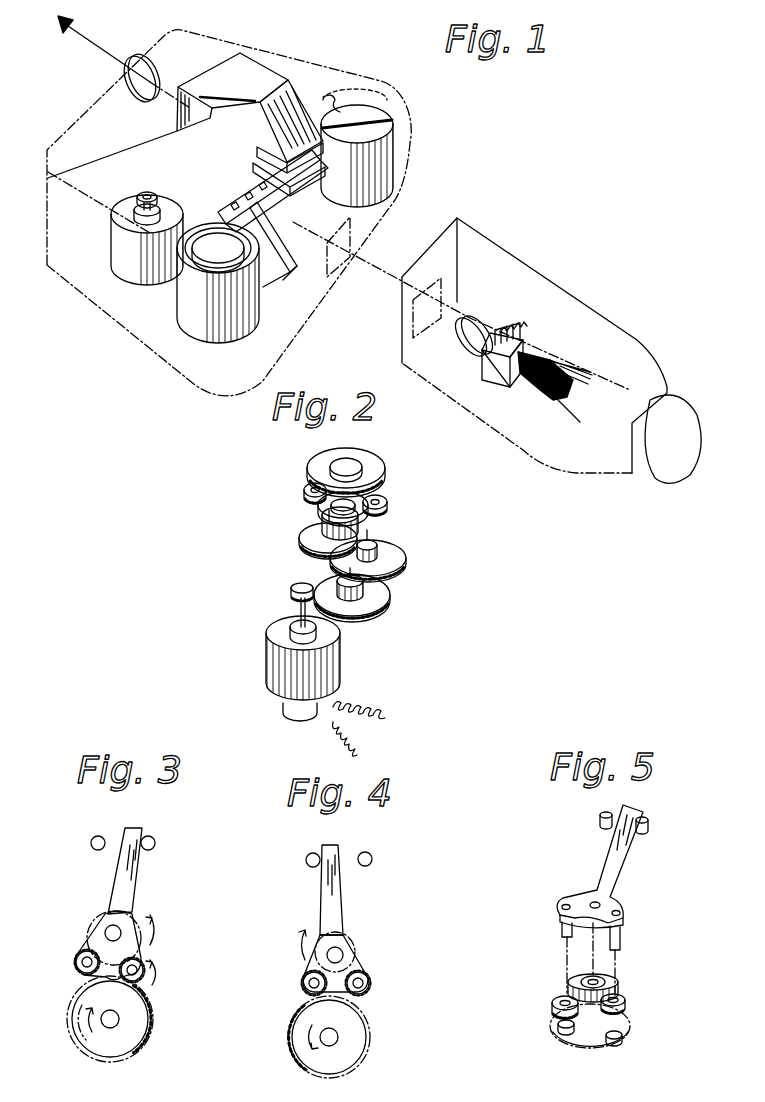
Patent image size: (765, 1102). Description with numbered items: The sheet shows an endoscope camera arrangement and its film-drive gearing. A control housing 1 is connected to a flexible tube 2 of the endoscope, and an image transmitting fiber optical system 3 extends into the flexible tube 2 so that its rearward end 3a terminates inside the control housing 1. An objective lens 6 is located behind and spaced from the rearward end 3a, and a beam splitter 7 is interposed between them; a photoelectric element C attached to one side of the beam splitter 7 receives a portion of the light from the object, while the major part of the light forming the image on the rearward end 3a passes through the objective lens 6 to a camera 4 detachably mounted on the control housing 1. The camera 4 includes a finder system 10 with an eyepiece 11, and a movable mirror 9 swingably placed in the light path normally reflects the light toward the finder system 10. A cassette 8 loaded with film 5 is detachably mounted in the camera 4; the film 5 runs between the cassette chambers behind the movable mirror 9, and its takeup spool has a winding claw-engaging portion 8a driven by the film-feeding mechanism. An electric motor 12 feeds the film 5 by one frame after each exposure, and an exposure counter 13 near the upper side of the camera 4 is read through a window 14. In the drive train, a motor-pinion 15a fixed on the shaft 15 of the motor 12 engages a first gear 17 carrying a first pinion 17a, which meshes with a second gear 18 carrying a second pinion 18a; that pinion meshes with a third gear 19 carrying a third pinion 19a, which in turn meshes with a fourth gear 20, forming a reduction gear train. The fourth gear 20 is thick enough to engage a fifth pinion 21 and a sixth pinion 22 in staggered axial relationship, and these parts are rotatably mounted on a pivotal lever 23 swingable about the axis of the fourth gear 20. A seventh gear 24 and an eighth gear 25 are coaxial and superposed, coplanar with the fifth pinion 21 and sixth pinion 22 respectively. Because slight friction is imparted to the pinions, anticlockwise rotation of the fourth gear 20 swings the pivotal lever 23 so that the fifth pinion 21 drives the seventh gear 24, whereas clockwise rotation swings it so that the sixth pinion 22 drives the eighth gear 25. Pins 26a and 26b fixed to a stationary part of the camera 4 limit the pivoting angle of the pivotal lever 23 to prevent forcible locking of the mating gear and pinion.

In FIG. 1, the control housing 1 is at (567, 281).
In FIG. 1, the flexible tube 2 is at (643, 481).
In FIG. 1, the image transmitting fiber optical system 3 is at (600, 391).
In FIG. 1, the rearward end 3a is at (540, 343).
In FIG. 1, the camera 4 is at (250, 32).
In FIG. 1, the film 5 is at (250, 187).
In FIG. 1, the objective lens 6 is at (463, 343).
In FIG. 1, the beam splitter 7 is at (487, 378).
In FIG. 1, the cassette 8 is at (183, 333).
In FIG. 1, the winding claw-engaging portion 8a is at (183, 313).
In FIG. 1, the movable mirror 9 is at (293, 253).
In FIG. 1, the finder system 10 is at (258, 70).
In FIG. 1, the eyepiece 11 is at (140, 53).
In FIG. 1, the electric motor 12 is at (100, 305).
In FIG. 2, the electric motor 12 is at (273, 673).
In FIG. 1, the exposure counter 13 is at (356, 86).
In FIG. 1, the window 14 is at (289, 126).
In FIG. 1, the shaft 15 is at (127, 210).
In FIG. 2, the shaft 15 is at (300, 603).
In FIG. 1, the motor-pinion 15a is at (150, 197).
In FIG. 2, the motor-pinion 15a is at (291, 590).
In FIG. 2, the first gear 17 is at (360, 606).
In FIG. 2, the first pinion 17a is at (373, 588).
In FIG. 2, the second gear 18 is at (405, 560).
In FIG. 2, the second pinion 18a is at (387, 553).
In FIG. 2, the third gear 19 is at (303, 550).
In FIG. 2, the third pinion 19a is at (308, 530).
In FIG. 2, the fourth gear 20 is at (367, 507).
In FIG. 3, the fourth gear 20 is at (97, 923).
In FIG. 4, the fourth gear 20 is at (353, 943).
In FIG. 5, the fourth gear 20 is at (573, 974).
In FIG. 2, the fifth pinion 21 is at (390, 505).
In FIG. 3, the fifth pinion 21 is at (73, 960).
In FIG. 4, the fifth pinion 21 is at (300, 990).
In FIG. 5, the fifth pinion 21 is at (555, 1001).
In FIG. 2, the sixth pinion 22 is at (300, 500).
In FIG. 3, the sixth pinion 22 is at (147, 960).
In FIG. 4, the sixth pinion 22 is at (373, 982).
In FIG. 5, the sixth pinion 22 is at (630, 998).
In FIG. 3, the pivotal lever 23 is at (120, 870).
In FIG. 4, the pivotal lever 23 is at (323, 897).
In FIG. 5, the pivotal lever 23 is at (607, 857).
In FIG. 2, the seventh gear 24 is at (387, 485).
In FIG. 4, the seventh gear 24 is at (290, 1033).
In FIG. 5, the seventh gear 24 is at (565, 1046).
In FIG. 2, the eighth gear 25 is at (367, 453).
In FIG. 3, the eighth gear 25 is at (83, 997).
In FIG. 5, the eighth gear 25 is at (600, 1045).
In FIG. 3, the pin 26a is at (156, 843).
In FIG. 4, the pin 26a is at (373, 860).
In FIG. 5, the pin 26a is at (648, 826).
In FIG. 3, the pin 26b is at (89, 842).
In FIG. 4, the pin 26b is at (306, 862).
In FIG. 5, the pin 26b is at (600, 822).
In FIG. 1, the photoelectric element C is at (523, 337).